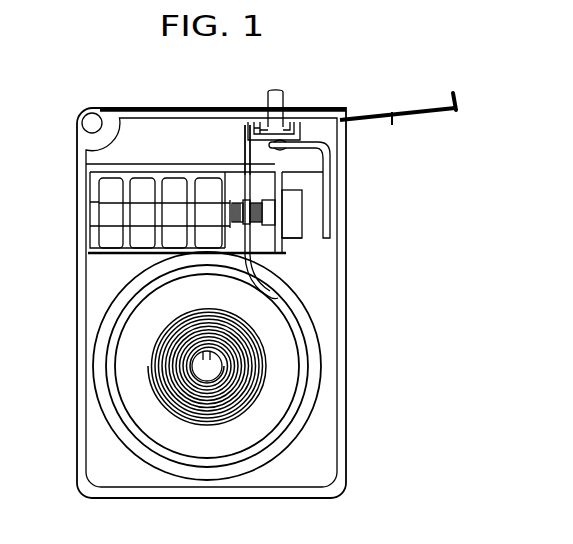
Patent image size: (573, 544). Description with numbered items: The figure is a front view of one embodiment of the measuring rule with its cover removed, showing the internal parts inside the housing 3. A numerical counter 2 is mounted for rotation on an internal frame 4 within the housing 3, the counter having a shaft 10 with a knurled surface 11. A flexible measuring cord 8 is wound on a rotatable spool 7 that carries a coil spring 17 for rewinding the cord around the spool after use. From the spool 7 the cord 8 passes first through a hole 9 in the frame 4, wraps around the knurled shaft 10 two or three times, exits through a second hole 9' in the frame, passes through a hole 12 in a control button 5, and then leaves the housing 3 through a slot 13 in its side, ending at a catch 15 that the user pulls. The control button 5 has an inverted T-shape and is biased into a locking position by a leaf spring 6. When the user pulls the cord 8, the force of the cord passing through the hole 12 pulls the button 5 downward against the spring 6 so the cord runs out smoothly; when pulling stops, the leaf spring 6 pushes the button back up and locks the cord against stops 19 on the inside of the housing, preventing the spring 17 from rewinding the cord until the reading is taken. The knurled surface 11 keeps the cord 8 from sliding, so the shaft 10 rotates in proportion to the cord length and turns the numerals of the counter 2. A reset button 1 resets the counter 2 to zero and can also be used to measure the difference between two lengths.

The reset button 1 is at (298, 234).
The numerical counter 2 is at (108, 217).
The housing 3 is at (128, 109).
The frame 4 is at (323, 213).
The control button 5 is at (276, 92).
The leaf spring 6 is at (328, 150).
The spool 7 is at (108, 372).
The measuring cord 8 is at (343, 350).
The hole 9 is at (277, 212).
The second hole 9' is at (231, 147).
The shaft 10 is at (236, 204).
The knurled surface 11 is at (250, 228).
The hole 12 is at (262, 120).
The slot 13 is at (388, 124).
The catch 15 is at (460, 103).
The coil spring 17 is at (227, 393).
The stops 19 is at (285, 118).